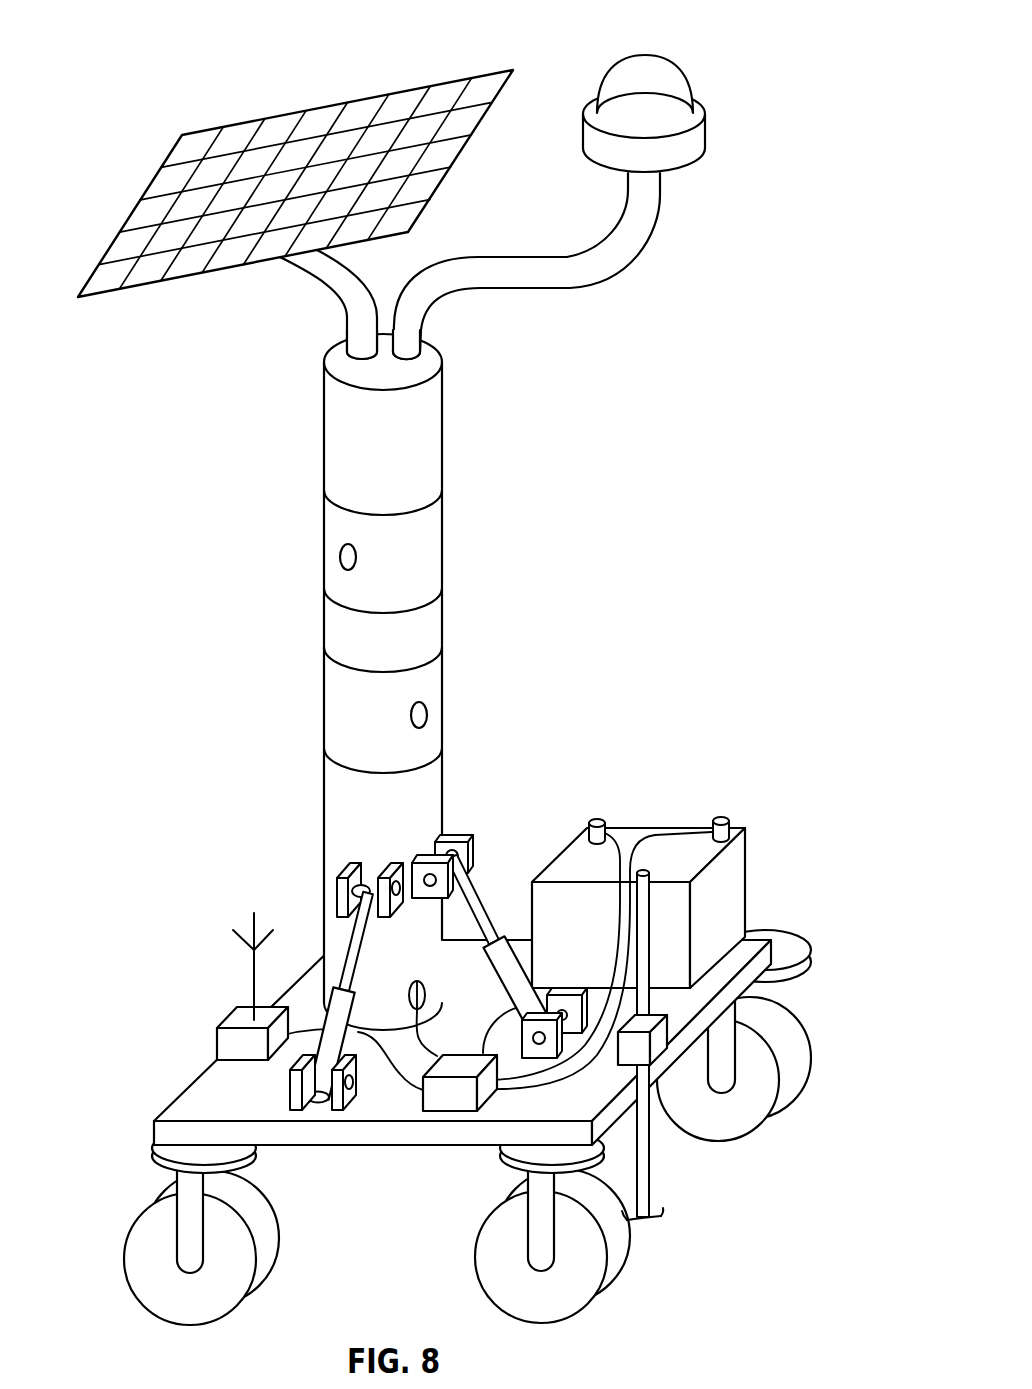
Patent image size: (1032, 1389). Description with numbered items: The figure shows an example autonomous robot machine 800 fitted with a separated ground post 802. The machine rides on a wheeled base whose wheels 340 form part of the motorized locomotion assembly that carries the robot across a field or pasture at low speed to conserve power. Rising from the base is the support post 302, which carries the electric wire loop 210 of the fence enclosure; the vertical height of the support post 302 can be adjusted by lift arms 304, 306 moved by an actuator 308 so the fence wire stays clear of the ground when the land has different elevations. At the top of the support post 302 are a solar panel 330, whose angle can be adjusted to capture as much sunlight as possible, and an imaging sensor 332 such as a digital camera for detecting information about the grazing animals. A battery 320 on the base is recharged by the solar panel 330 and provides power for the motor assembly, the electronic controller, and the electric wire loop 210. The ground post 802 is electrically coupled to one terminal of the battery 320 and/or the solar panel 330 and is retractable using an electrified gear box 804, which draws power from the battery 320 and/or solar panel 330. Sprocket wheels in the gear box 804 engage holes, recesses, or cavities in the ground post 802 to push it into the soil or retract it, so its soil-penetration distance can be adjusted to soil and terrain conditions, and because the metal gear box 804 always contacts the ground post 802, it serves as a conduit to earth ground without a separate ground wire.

The autonomous robot machine 800 is at (167, 44).
The solar panel 330 is at (160, 183).
The imaging sensor 332 is at (687, 145).
The support post 302 is at (425, 555).
The electric wire loop 210 is at (343, 563).
The lift arm 304 is at (353, 950).
The lift arm 306 is at (445, 938).
The battery 320 is at (735, 868).
The actuator 308 is at (449, 1097).
The ground post 802 is at (645, 1185).
The gear box 804 is at (747, 1135).
The wheels 340 is at (267, 1252).